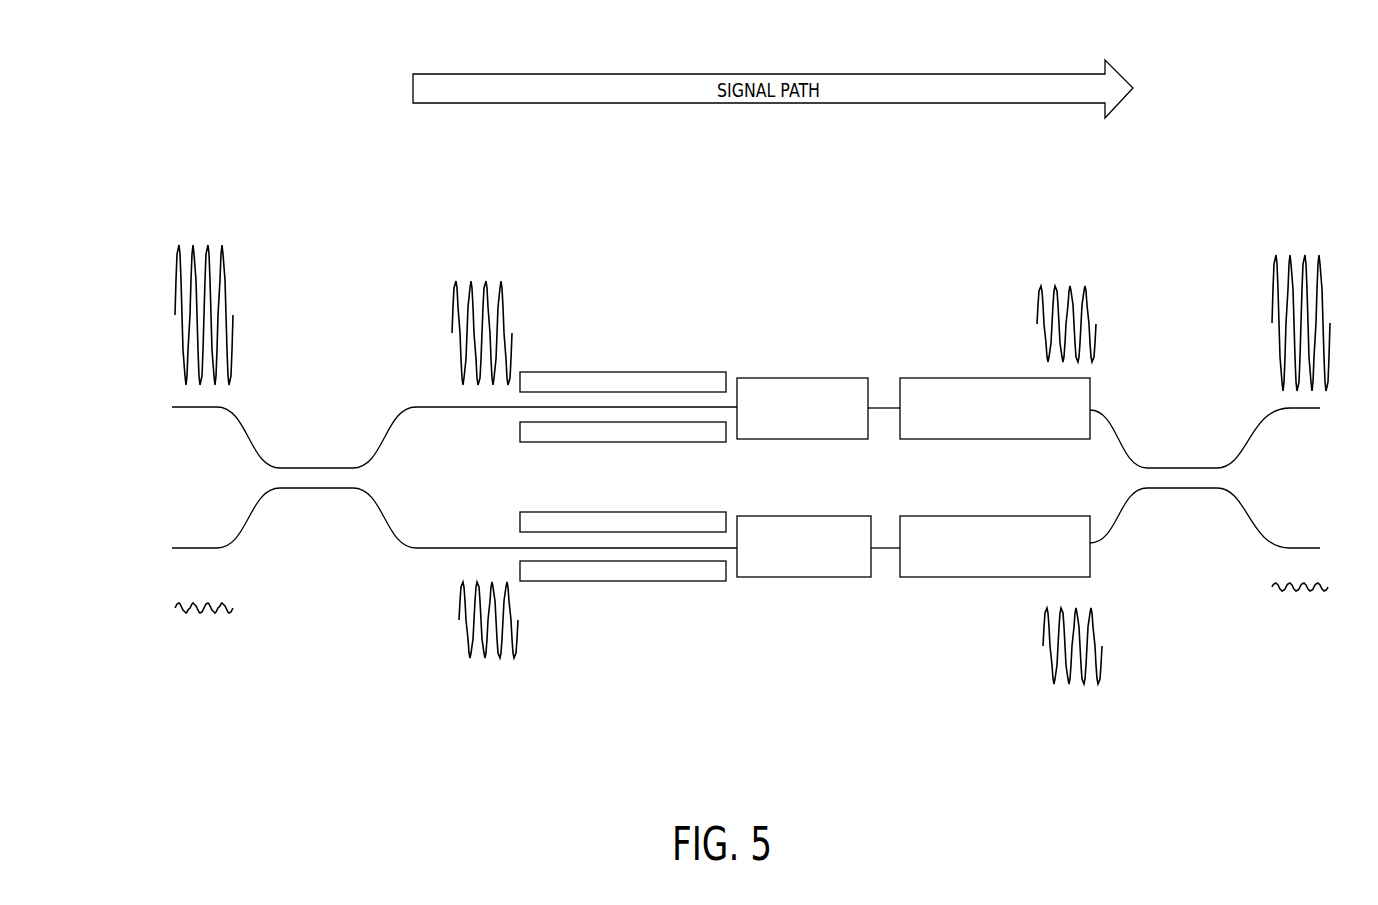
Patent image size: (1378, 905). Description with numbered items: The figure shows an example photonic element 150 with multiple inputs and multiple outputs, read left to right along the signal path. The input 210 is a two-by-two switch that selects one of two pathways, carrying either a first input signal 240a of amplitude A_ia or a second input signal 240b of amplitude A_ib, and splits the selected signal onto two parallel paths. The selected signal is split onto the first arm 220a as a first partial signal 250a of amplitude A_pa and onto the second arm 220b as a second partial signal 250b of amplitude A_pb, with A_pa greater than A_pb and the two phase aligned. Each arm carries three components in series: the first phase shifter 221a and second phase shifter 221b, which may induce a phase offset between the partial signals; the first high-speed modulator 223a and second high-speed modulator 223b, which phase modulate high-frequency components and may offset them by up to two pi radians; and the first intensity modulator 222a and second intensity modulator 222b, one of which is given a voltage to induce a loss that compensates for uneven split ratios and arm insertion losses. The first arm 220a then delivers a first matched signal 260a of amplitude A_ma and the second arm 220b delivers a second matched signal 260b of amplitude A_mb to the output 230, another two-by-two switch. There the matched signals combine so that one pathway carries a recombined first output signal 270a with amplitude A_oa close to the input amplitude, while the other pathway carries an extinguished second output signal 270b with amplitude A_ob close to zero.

The photonic element 150 is at (128, 106).
The input 210 is at (338, 580).
The output 230 is at (1204, 271).
The first arm 220a is at (805, 345).
The second arm 220b is at (805, 632).
The first phase shifter 221a is at (622, 382).
The second phase shifter 221b is at (634, 581).
The first intensity modulator 222a is at (995, 392).
The second intensity modulator 222b is at (992, 577).
The first high-speed modulator 223a is at (833, 392).
The second high-speed modulator 223b is at (832, 577).
The first input signal 240a is at (180, 245).
The second input signal 240b is at (183, 612).
The first partial signal 250a is at (457, 282).
The second partial signal 250b is at (470, 658).
The first matched signal 260a is at (1042, 286).
The second matched signal 260b is at (1097, 685).
The first output signal 270a is at (1320, 255).
The second output signal 270b is at (1312, 590).